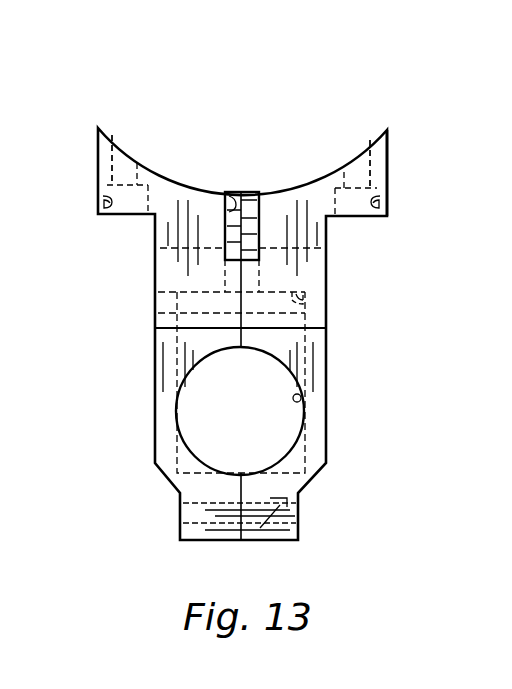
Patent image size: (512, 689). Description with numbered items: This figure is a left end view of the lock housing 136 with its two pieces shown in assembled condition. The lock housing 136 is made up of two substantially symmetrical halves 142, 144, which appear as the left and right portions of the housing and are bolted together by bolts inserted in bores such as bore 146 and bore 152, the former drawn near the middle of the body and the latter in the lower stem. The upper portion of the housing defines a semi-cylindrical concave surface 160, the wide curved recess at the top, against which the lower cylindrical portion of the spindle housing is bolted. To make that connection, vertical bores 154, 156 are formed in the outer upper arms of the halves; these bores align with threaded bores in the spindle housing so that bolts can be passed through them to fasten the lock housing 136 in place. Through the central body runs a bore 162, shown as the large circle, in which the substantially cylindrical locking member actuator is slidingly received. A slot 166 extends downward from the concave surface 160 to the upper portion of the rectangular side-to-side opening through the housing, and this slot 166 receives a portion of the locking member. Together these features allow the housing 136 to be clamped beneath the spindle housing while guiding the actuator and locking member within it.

The lock housing 136 is at (97, 147).
The housing half 142 is at (150, 178).
The housing half 144 is at (378, 152).
The bore 146 is at (330, 308).
The bore 152 is at (298, 508).
The vertical bore 154 is at (98, 211).
The vertical bore 156 is at (388, 208).
The semi-cylindrical concave surface 160 is at (305, 180).
The bore 162 is at (300, 400).
The slot 166 is at (237, 192).